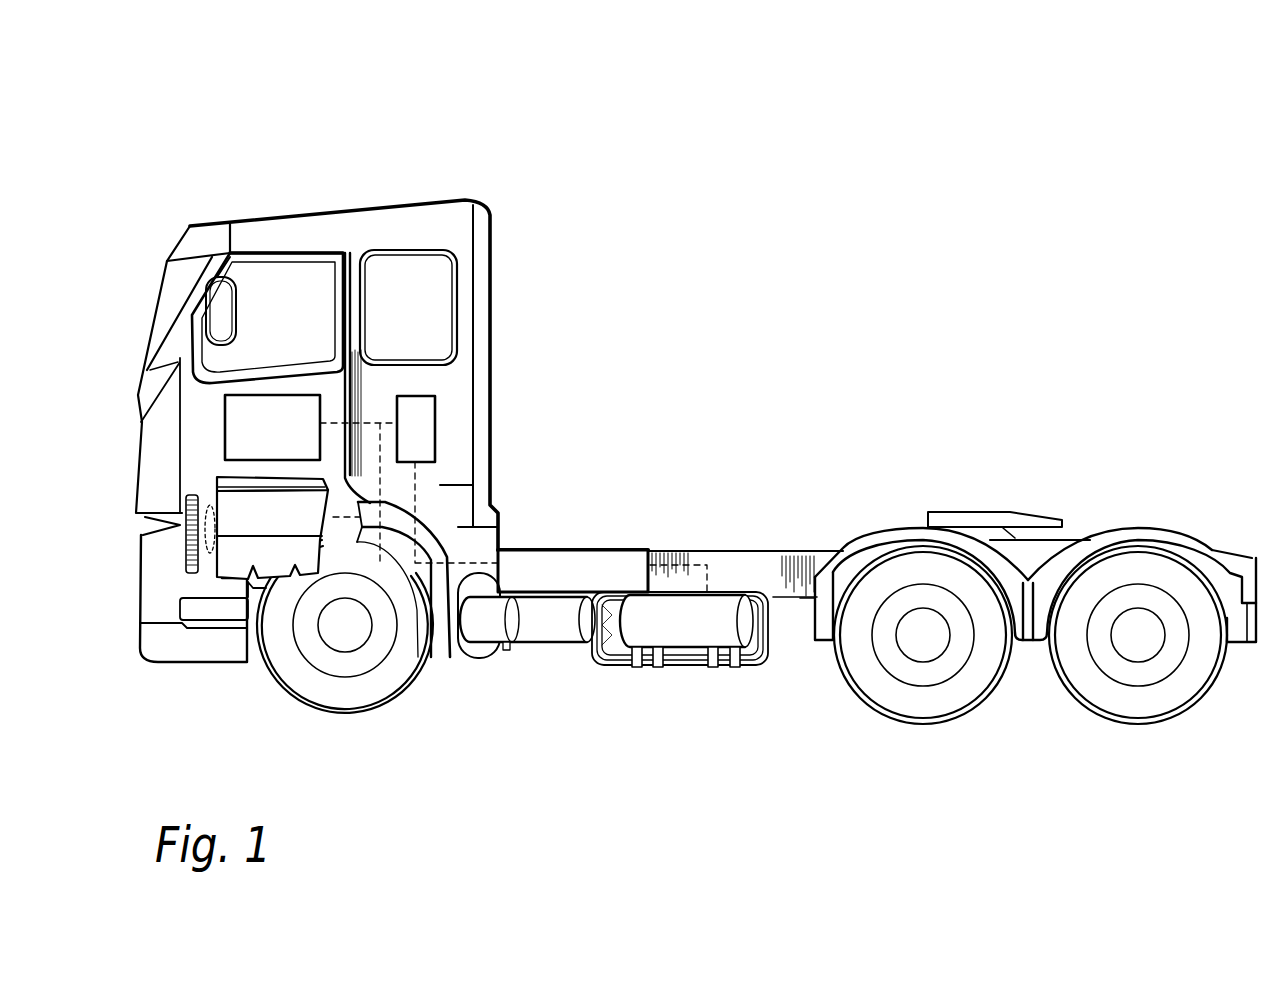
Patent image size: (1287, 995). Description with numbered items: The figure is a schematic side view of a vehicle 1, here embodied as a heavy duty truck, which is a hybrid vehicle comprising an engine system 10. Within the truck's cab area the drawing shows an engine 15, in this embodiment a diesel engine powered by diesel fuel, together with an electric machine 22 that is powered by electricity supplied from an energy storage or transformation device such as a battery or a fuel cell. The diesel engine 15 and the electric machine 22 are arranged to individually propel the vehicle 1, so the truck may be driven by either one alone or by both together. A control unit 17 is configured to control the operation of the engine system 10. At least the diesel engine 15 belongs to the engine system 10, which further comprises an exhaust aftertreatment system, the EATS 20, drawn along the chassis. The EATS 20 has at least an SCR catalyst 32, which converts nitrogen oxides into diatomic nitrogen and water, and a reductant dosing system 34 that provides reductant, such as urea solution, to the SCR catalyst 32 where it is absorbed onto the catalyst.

The vehicle 1 is at (188, 114).
The engine system 10 is at (516, 500).
The diesel engine 15 is at (220, 582).
The control unit 17 is at (437, 422).
The EATS 20 is at (522, 742).
The electric machine 22 is at (225, 432).
The SCR catalyst 32 is at (688, 623).
The reductant dosing system 34 is at (627, 548).